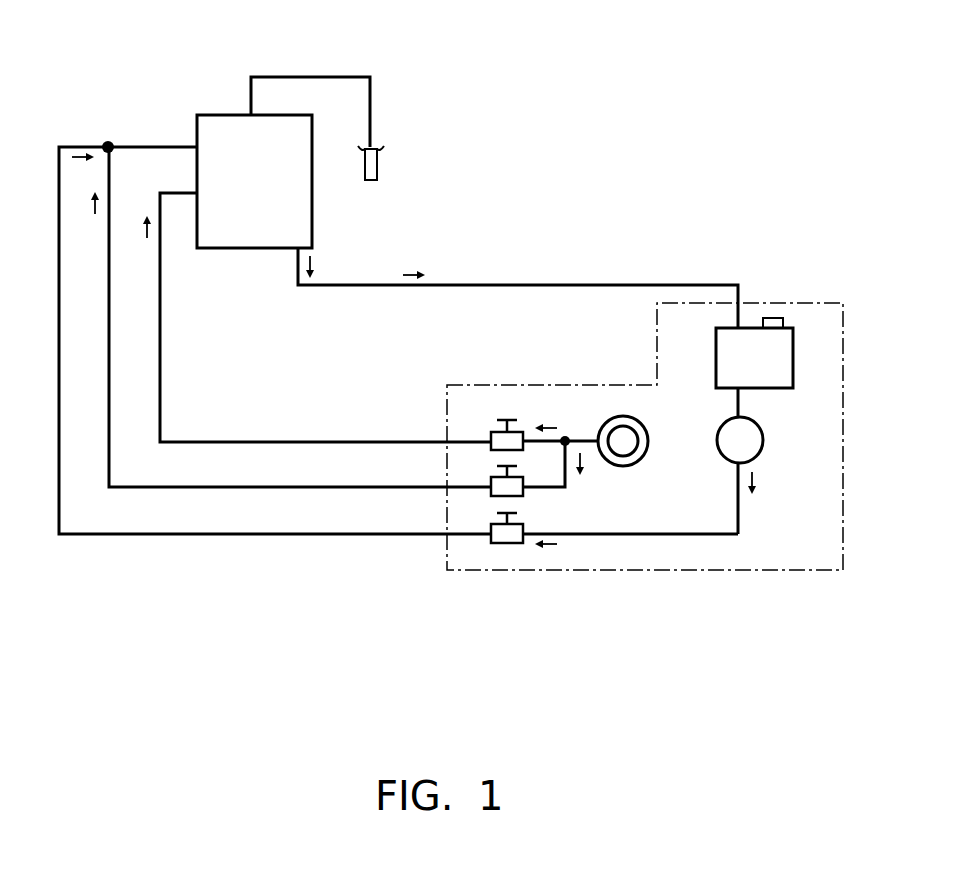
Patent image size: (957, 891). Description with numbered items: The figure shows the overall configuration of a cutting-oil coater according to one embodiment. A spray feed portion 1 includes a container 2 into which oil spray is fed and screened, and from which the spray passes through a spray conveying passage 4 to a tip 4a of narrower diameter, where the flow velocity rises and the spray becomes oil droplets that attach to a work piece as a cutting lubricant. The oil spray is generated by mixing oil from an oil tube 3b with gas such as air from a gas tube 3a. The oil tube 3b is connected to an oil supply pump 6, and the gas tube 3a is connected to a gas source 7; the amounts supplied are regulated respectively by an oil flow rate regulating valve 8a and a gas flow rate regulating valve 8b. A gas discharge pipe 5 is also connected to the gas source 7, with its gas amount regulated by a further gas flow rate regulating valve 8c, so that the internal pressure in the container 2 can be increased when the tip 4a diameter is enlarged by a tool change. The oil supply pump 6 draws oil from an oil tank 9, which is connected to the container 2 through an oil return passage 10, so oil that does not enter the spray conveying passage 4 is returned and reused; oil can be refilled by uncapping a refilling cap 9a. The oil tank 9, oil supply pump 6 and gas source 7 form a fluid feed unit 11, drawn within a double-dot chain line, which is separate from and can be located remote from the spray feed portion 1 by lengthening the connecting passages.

The spray feed portion 1 is at (200, 94).
The container 2 is at (312, 225).
The gas tube 3a is at (267, 488).
The oil tube 3b is at (345, 535).
The spray conveying passage 4 is at (310, 77).
The tip 4a is at (378, 162).
The gas discharge pipe 5 is at (200, 442).
The oil supply pump 6 is at (764, 441).
The gas source 7 is at (633, 466).
The oil flow rate regulating valve 8a is at (512, 540).
The gas flow rate regulating valve 8b is at (505, 492).
The gas flow rate regulating valve 8c is at (495, 448).
The oil tank 9 is at (793, 369).
The refilling cap 9a is at (773, 318).
The oil return passage 10 is at (543, 283).
The fluid feed unit 11 is at (782, 572).